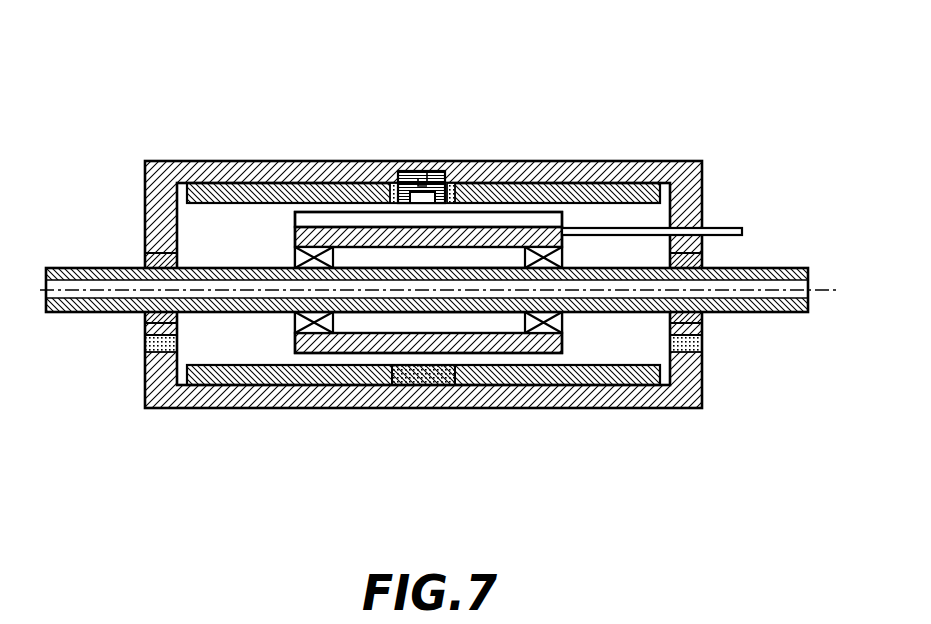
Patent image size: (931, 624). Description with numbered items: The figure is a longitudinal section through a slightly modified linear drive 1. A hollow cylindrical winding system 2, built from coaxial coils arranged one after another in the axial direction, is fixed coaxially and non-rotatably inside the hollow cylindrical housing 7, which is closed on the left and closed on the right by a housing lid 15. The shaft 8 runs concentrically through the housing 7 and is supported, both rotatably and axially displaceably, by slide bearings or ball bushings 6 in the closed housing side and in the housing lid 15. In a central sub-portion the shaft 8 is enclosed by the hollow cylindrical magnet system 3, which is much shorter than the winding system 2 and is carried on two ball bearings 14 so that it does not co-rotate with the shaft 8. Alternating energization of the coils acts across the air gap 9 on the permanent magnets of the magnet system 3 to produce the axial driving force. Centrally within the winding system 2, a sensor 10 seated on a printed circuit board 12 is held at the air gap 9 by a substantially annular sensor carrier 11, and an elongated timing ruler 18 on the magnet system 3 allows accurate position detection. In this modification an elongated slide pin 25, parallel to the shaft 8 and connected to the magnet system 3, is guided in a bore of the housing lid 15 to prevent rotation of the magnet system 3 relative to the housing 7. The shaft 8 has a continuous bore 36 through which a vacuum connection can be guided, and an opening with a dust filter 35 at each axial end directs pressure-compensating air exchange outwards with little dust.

The linear drive 1 is at (438, 230).
The winding system 2 is at (237, 195).
The magnet system 3 is at (328, 340).
The slide bearings or ball bushings 6 is at (157, 258).
The housing 7 is at (190, 172).
The shaft 8 is at (80, 270).
The air gap 9 is at (513, 208).
The sensor 10 is at (428, 190).
The sensor carrier 11 is at (450, 193).
The printed circuit board 12 is at (403, 172).
The ball bearings 14 is at (323, 256).
The housing lid 15 is at (690, 372).
The timing ruler 18 is at (305, 217).
The slide pin 25 is at (720, 232).
The dust filter 35 is at (150, 348).
The continuous bore 36 is at (787, 287).